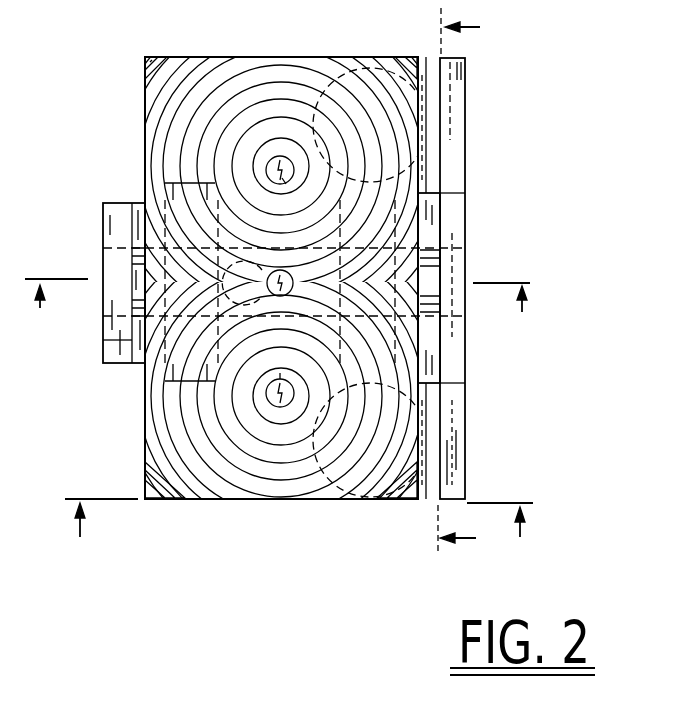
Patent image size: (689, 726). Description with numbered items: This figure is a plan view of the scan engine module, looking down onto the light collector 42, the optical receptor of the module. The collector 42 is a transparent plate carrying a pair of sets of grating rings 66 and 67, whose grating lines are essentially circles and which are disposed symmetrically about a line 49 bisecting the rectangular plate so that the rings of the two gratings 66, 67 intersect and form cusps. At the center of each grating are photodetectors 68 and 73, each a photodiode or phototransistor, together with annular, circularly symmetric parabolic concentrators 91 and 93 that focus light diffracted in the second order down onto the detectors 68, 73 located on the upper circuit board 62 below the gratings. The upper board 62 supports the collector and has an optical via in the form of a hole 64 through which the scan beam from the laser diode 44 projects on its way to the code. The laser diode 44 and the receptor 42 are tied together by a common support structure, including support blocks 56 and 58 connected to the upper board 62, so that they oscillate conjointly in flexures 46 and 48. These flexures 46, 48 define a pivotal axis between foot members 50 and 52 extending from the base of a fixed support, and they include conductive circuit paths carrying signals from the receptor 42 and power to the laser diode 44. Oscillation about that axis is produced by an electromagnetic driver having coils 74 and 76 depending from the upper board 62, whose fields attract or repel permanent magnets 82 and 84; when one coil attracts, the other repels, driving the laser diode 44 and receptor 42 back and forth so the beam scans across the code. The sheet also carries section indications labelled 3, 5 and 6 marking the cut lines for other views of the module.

The light collector 42 is at (200, 57).
The grating rings 66 is at (244, 58).
The grating rings 67 is at (213, 483).
The photodetector 68 is at (281, 158).
The concentrator 93 is at (285, 182).
The laser diode 44 is at (278, 236).
The hole 64 is at (289, 296).
The photodetector 73 is at (283, 400).
The concentrator 91 is at (281, 386).
The coil 76 is at (452, 96).
The coil 74 is at (360, 480).
The flexure 46 is at (133, 280).
The line 49 is at (150, 283).
The foot member 50 is at (108, 343).
The support block 56 is at (168, 367).
The flexure 48 is at (430, 282).
The permanent magnet 82 is at (450, 125).
The support block 58 is at (442, 385).
The upper circuit board 62 is at (466, 195).
The foot member 52 is at (466, 230).
The permanent magnet 84 is at (452, 440).
The section line 6- 6 is at (448, 283).
The section line 3- 3 is at (277, 280).
The section line 5- 5 is at (299, 501).